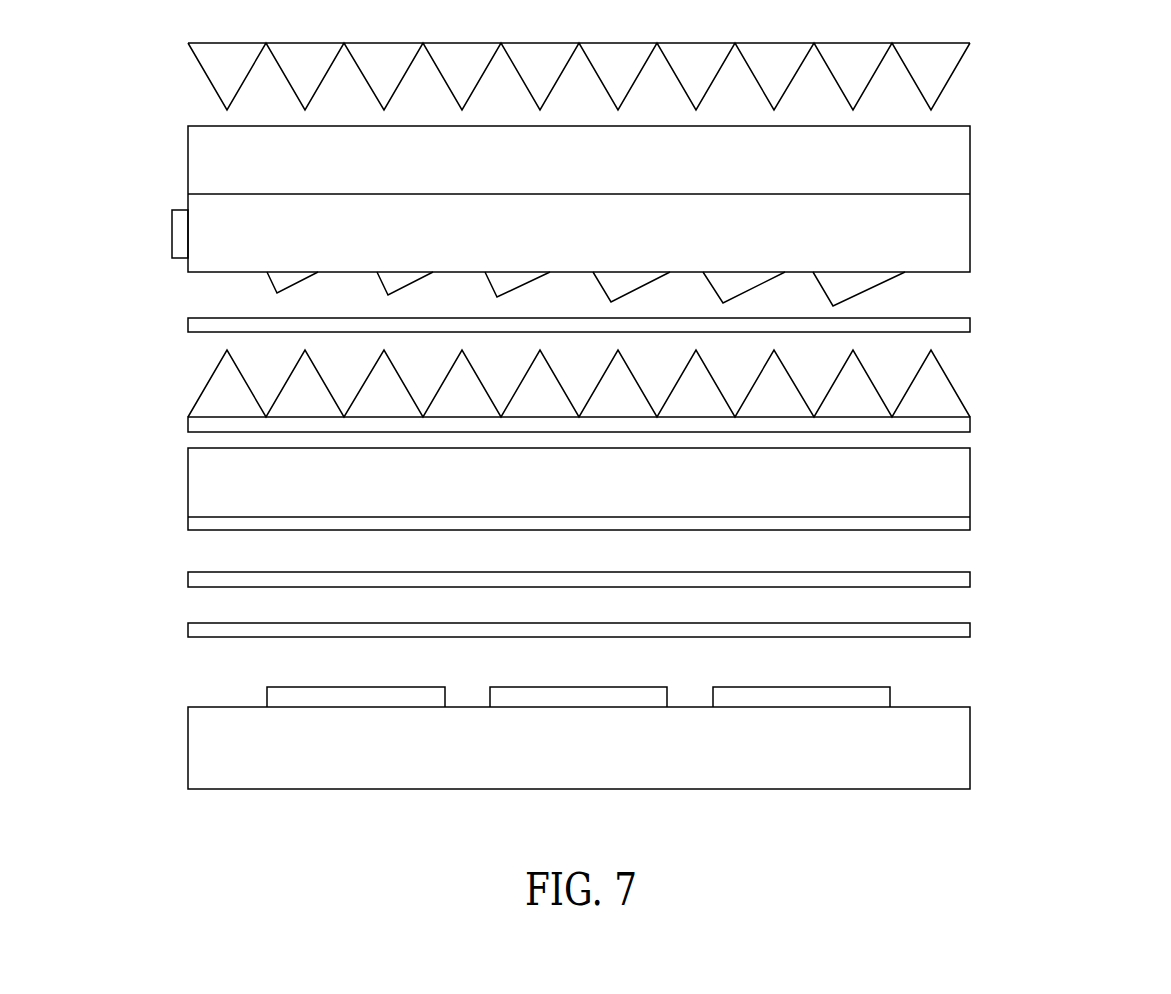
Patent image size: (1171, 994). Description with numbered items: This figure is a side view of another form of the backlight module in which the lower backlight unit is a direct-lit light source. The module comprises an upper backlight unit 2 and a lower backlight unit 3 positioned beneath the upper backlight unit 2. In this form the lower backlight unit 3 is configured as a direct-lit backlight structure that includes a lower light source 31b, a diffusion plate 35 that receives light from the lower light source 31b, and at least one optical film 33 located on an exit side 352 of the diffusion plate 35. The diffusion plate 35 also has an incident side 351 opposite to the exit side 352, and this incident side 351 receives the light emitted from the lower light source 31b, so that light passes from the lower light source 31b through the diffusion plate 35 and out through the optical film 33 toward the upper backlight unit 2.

The upper backlight unit 2 is at (137, 45).
The lower backlight unit 3 is at (145, 330).
The optical film 33 is at (970, 583).
The diffusion plate 35 is at (938, 660).
The exit side 352 is at (957, 620).
The incident side 351 is at (957, 637).
The lower light source 31b is at (970, 777).